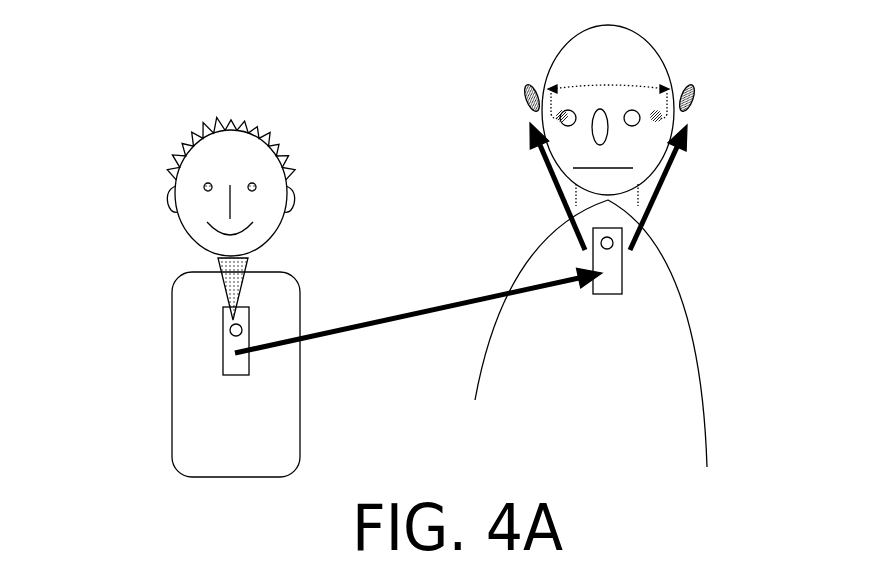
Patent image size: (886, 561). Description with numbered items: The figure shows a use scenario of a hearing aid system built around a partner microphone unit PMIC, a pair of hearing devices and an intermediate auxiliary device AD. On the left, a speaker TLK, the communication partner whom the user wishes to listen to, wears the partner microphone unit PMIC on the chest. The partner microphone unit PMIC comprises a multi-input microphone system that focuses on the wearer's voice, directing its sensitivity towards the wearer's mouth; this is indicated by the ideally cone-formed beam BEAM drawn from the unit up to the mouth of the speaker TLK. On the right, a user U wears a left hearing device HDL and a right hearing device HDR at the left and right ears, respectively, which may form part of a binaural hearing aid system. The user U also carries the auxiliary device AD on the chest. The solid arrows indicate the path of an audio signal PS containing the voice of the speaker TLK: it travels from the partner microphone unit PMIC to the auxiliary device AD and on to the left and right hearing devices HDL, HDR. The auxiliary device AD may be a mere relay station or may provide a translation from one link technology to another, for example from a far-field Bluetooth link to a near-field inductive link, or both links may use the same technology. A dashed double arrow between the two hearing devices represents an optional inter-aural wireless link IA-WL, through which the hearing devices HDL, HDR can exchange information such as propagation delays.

The speaker TLK is at (243, 152).
The cone-formed beam BEAM is at (227, 280).
The partner microphone unit PMIC is at (232, 352).
The audio signal PS is at (418, 310).
The user U is at (582, 50).
The inter-aural wireless link IA-WL is at (608, 88).
The right hearing device HDR is at (531, 88).
The left hearing device HDL is at (689, 92).
The auxiliary device AD is at (603, 273).